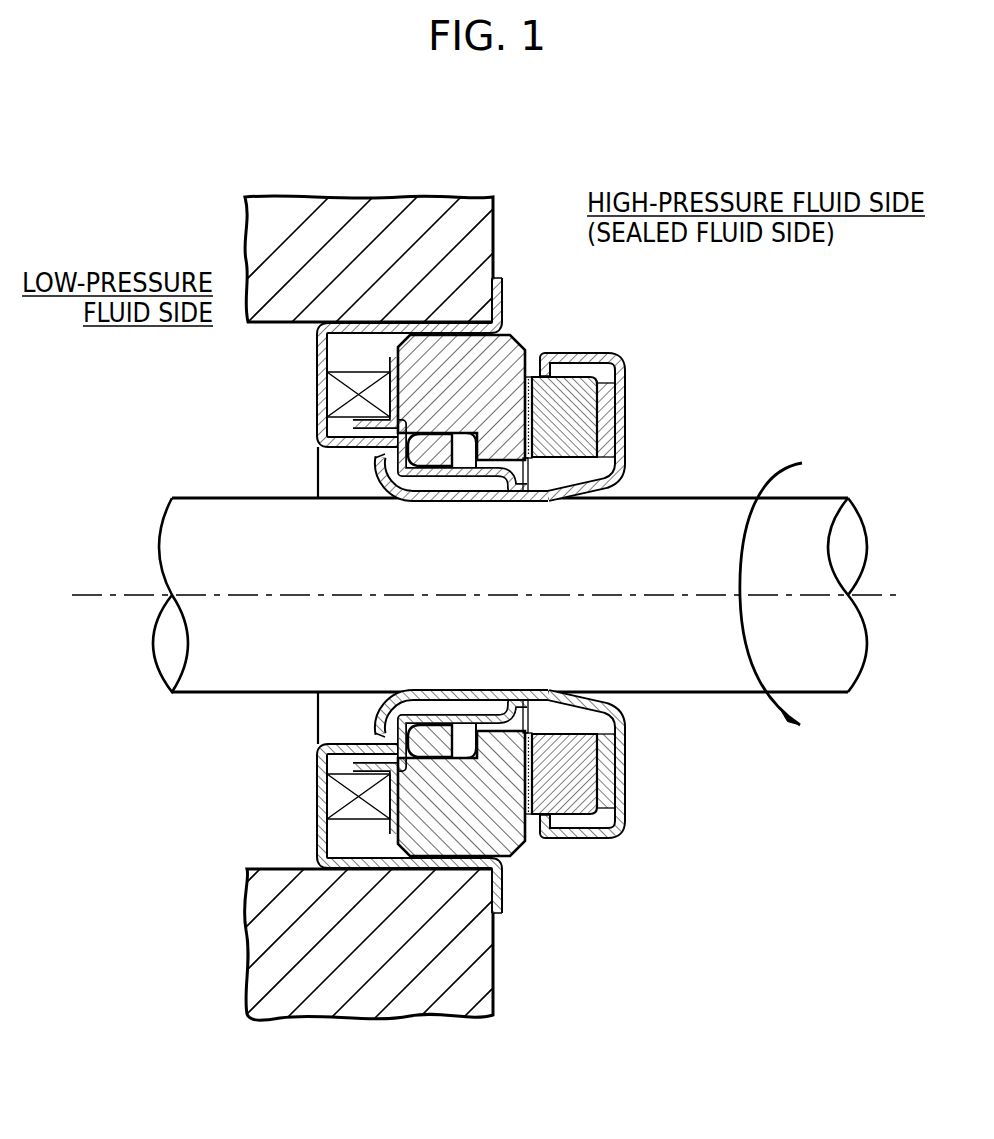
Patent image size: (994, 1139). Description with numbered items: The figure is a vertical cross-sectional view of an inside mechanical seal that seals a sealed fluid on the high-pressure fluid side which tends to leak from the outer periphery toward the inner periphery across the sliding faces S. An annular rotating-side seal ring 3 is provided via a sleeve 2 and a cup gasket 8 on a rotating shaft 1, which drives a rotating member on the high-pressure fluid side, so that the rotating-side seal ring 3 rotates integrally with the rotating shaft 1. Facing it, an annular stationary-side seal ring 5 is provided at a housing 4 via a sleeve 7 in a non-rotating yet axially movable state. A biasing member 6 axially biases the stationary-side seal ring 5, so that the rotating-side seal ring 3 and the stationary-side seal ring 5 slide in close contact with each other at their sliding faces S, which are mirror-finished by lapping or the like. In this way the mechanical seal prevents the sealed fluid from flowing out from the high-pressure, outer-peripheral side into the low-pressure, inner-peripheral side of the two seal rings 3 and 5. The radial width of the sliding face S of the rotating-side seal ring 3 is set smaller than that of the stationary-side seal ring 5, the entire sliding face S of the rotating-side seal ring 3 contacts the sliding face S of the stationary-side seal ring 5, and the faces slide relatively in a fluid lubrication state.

The rotating shaft 1 is at (428, 642).
The sleeve 2 is at (546, 500).
The rotating-side seal ring 3 is at (628, 456).
The housing 4 is at (327, 222).
The stationary-side seal ring 5 is at (442, 368).
The biasing member 6 is at (318, 428).
The sleeve 7 is at (318, 364).
The cup gasket 8 is at (614, 395).
The sliding face S is at (518, 412).